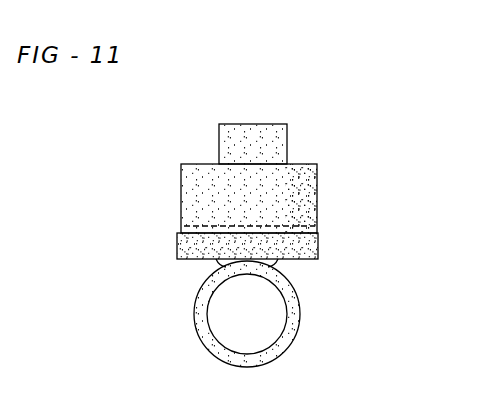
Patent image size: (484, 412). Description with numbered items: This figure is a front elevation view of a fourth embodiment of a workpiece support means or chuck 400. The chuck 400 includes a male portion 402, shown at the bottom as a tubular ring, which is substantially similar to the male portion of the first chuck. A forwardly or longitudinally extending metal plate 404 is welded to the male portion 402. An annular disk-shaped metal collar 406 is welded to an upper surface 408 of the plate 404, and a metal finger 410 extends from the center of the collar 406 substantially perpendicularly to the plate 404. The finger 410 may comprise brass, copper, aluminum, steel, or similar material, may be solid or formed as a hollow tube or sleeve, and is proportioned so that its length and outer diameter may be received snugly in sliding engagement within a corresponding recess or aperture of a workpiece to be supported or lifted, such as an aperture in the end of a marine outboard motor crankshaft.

The chuck 400 is at (143, 195).
The male portion 402 is at (194, 326).
The metal plate 404 is at (317, 261).
The metal collar 406 is at (317, 200).
The upper surface 408 is at (210, 228).
The metal finger 410 is at (287, 127).